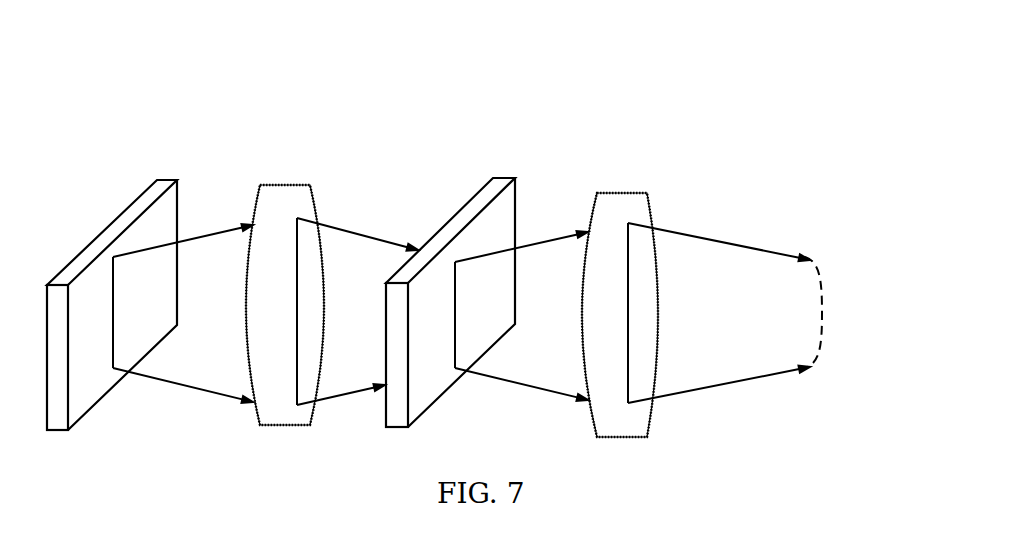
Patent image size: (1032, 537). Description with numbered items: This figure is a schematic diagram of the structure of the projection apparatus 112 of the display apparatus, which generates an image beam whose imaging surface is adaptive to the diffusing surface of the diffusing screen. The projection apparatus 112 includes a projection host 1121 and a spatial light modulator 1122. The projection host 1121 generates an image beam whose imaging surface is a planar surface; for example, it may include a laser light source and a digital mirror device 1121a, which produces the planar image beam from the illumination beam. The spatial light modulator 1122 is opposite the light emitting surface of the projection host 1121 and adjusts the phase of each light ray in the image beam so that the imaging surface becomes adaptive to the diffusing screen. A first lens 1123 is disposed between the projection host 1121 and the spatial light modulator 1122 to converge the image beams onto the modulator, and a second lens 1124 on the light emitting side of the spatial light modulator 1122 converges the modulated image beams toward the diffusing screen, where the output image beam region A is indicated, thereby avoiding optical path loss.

The projection apparatus 112 is at (68, 38).
The projection host 1121 is at (222, 83).
The digital mirror device (DMD) 1121a is at (161, 180).
The spatial light modulator 1122 is at (503, 178).
The first lens 1123 is at (283, 185).
The second lens 1124 is at (615, 193).
The light spot region A is at (822, 303).